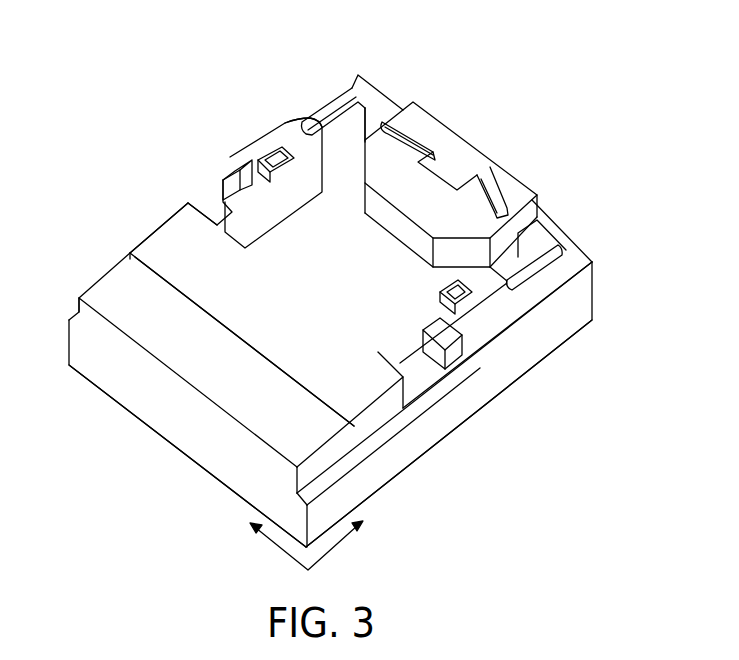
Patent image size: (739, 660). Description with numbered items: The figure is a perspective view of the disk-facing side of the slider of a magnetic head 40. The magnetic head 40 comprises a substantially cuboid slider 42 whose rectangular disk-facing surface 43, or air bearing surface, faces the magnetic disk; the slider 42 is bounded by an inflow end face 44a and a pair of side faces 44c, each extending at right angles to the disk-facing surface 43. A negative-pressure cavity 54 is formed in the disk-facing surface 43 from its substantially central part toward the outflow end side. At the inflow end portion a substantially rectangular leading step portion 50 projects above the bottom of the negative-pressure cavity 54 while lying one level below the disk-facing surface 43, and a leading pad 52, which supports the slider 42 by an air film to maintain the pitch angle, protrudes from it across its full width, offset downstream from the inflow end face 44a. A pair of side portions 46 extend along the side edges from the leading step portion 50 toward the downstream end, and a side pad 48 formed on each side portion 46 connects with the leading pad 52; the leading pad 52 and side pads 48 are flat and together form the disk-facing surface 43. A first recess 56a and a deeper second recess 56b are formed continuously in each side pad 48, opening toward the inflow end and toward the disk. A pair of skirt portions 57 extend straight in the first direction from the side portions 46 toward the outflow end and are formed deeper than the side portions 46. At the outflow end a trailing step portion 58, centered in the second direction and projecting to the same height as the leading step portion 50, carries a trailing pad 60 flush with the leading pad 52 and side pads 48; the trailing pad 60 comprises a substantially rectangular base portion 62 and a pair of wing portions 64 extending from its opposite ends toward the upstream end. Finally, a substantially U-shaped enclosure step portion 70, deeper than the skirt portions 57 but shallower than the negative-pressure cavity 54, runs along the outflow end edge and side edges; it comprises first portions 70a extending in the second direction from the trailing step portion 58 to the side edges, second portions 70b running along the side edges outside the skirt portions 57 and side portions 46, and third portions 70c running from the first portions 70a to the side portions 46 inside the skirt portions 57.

The magnetic head 40 is at (532, 384).
The slider 42 is at (153, 397).
The disk-facing surface 43 is at (186, 226).
The inflow end face 44a is at (105, 378).
The side faces 44c is at (447, 410).
The side portions 46 is at (412, 350).
The side pad 48 is at (288, 140).
The leading step portion 50 is at (102, 287).
The leading pad 52 is at (162, 238).
The negative-pressure cavity 54 is at (327, 290).
The first recess 56a is at (272, 180).
The second recess 56b is at (232, 183).
The skirt portions 57 is at (318, 115).
The trailing step portion 58 is at (523, 200).
The trailing pad 60 is at (455, 122).
The base portion 62 is at (468, 158).
The wing portions 64 is at (407, 121).
The enclosure step portion 70 is at (577, 261).
The first portions 70a is at (380, 112).
The second portions 70b is at (305, 120).
The third portions 70c is at (340, 140).